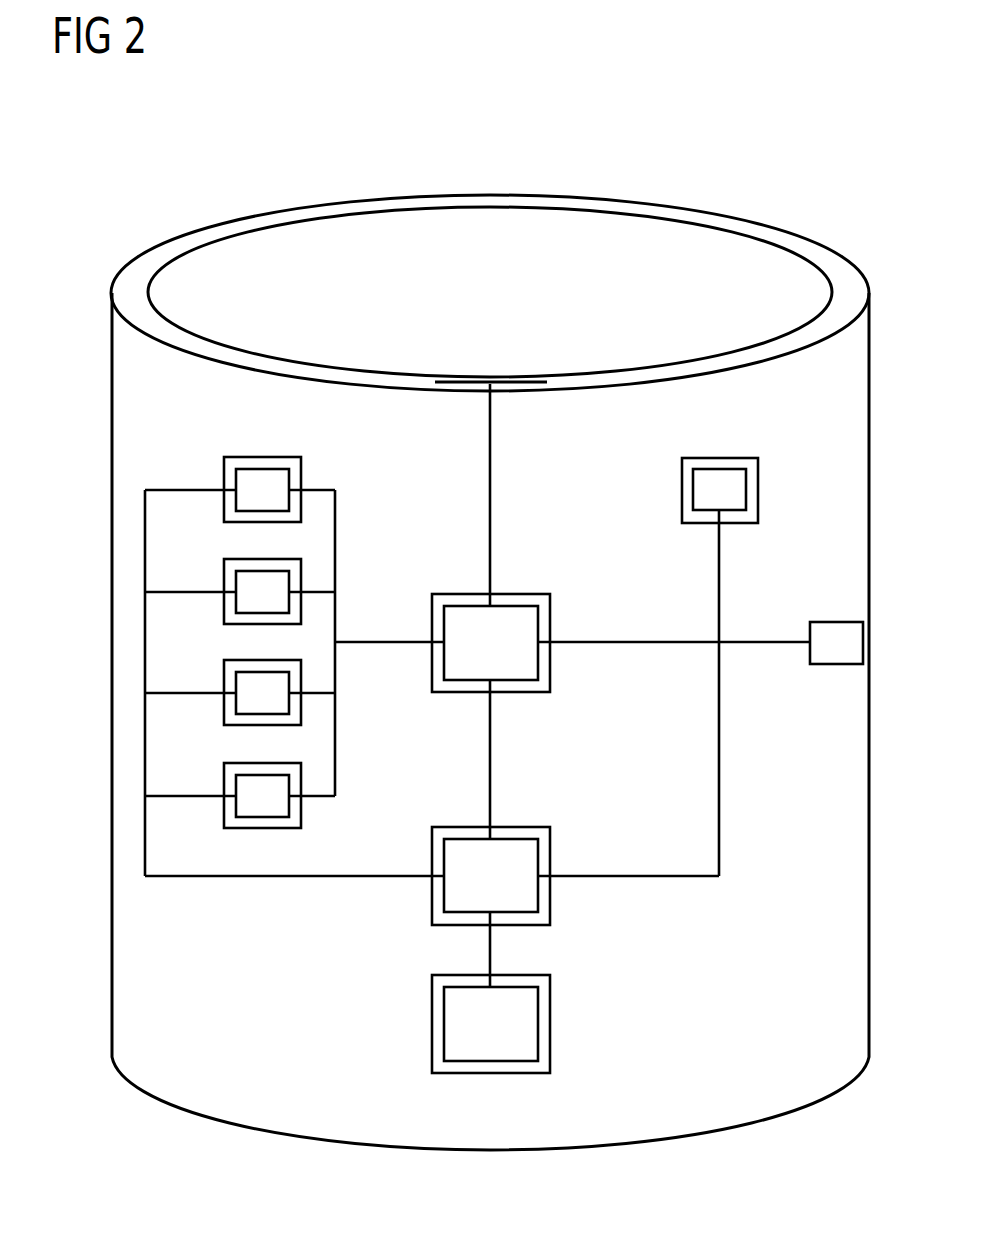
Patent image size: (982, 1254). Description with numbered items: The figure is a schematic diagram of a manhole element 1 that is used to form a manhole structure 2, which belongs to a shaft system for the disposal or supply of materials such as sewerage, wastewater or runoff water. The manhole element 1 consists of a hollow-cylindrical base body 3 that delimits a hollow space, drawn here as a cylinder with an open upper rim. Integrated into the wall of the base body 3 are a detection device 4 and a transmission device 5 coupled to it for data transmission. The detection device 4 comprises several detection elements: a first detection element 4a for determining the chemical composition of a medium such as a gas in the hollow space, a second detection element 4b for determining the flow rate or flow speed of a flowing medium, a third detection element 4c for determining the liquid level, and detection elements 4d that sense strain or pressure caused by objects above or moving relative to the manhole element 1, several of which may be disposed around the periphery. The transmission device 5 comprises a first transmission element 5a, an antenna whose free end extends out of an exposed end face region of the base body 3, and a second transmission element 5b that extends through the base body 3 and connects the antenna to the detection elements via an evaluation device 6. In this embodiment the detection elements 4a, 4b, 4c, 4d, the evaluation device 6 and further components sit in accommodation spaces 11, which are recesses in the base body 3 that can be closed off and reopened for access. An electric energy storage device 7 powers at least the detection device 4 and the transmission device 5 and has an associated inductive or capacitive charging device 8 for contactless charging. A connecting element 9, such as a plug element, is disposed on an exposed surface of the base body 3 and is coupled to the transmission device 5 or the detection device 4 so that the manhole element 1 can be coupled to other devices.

The manhole element 1 is at (356, 118).
The manhole structure 2 is at (760, 206).
The base body 3 is at (112, 422).
The detection device 4 is at (206, 436).
The first detection element 4a is at (236, 480).
The second detection element 4b is at (236, 582).
The third detection element 4c is at (236, 683).
The detection element 4d is at (236, 786).
The transmission device 5 is at (450, 438).
The first transmission element 5a is at (508, 381).
The second transmission element 5b is at (493, 460).
The evaluation device 6 is at (538, 621).
The electric energy storage device 7 is at (538, 860).
The charging device 8 is at (538, 1008).
The connecting element 9 is at (836, 620).
The accommodation spaces 11 is at (252, 457).